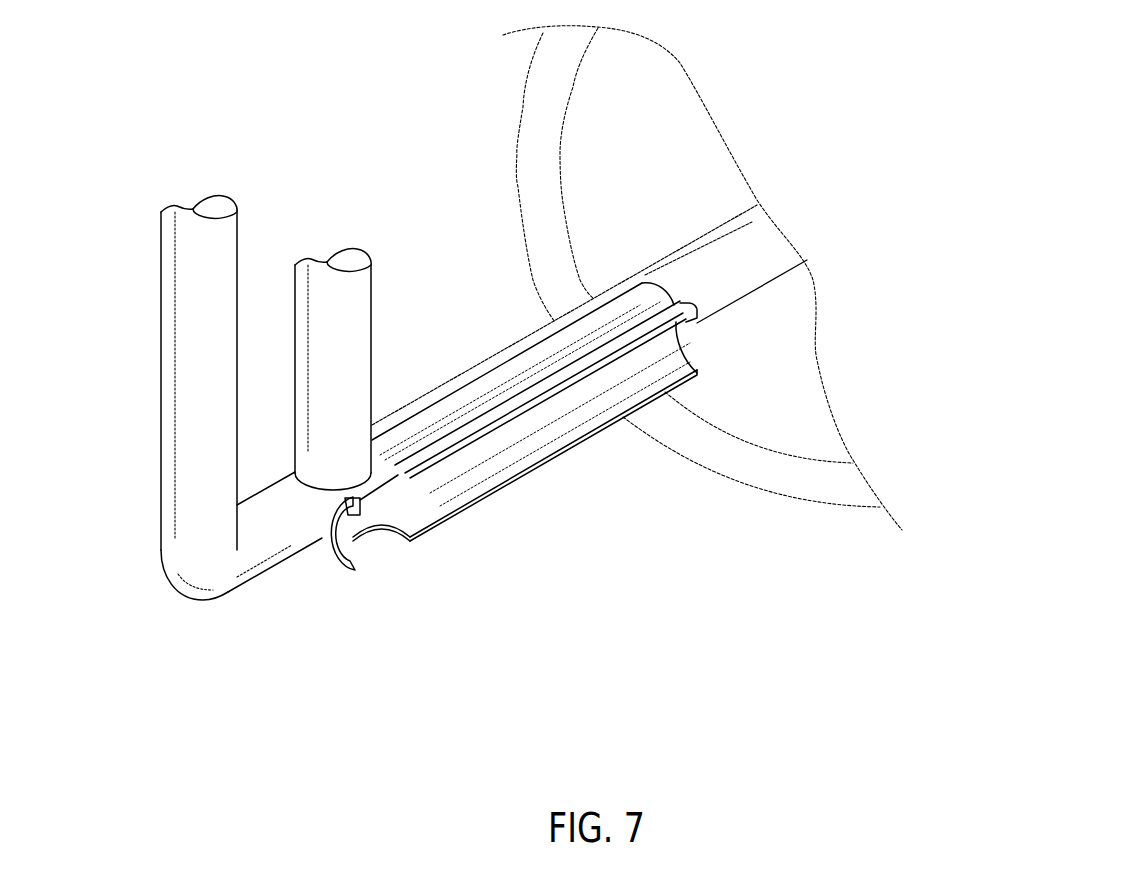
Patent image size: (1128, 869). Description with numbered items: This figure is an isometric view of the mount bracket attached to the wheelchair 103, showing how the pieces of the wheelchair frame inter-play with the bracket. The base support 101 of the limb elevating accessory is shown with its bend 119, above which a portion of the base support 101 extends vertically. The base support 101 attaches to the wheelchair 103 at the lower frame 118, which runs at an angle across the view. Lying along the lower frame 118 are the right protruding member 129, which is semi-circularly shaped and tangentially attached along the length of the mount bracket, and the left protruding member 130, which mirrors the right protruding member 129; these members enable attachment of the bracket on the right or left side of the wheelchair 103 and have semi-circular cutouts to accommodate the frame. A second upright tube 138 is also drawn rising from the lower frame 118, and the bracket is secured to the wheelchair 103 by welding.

The base support 101 is at (180, 383).
The wheelchair 103 is at (537, 115).
The lower frame 118 is at (690, 260).
The bend 119 is at (205, 582).
The right protruding member 129 is at (477, 488).
The left protruding member 130 is at (480, 385).
The second vertical tube 138 is at (348, 287).